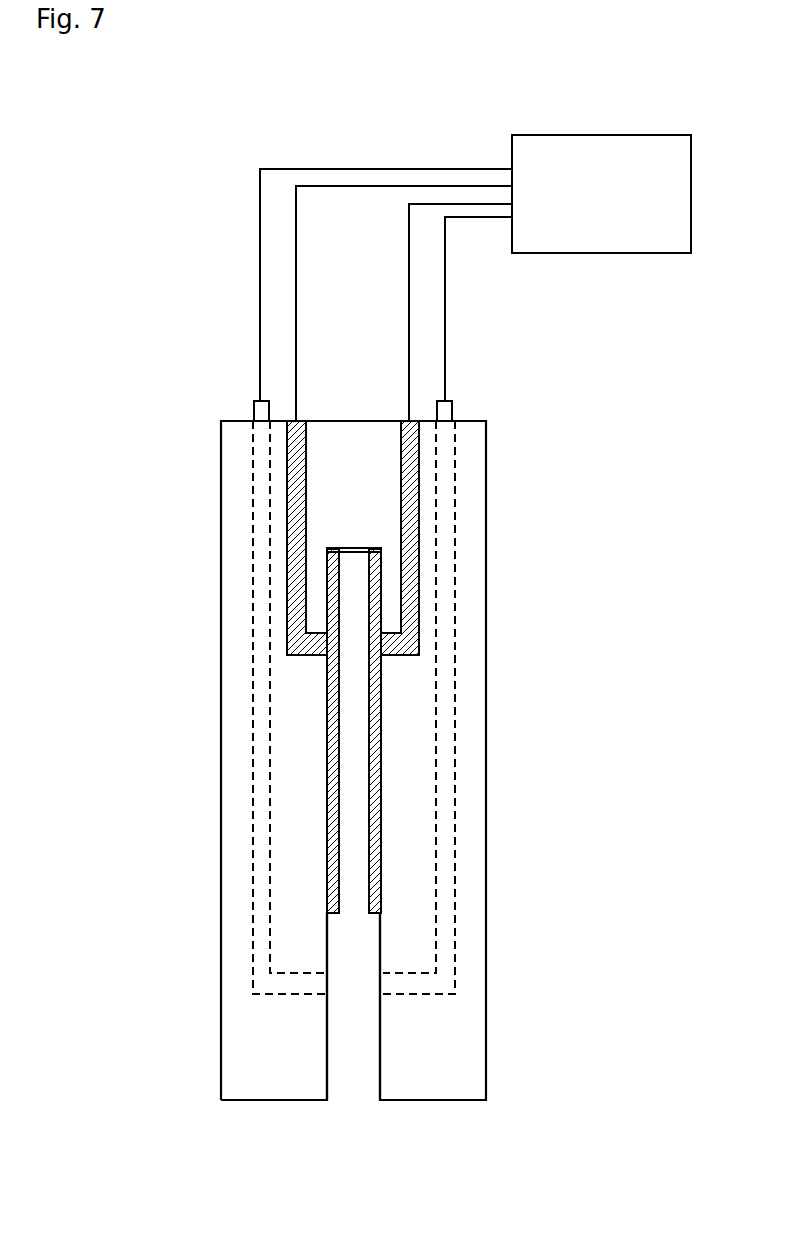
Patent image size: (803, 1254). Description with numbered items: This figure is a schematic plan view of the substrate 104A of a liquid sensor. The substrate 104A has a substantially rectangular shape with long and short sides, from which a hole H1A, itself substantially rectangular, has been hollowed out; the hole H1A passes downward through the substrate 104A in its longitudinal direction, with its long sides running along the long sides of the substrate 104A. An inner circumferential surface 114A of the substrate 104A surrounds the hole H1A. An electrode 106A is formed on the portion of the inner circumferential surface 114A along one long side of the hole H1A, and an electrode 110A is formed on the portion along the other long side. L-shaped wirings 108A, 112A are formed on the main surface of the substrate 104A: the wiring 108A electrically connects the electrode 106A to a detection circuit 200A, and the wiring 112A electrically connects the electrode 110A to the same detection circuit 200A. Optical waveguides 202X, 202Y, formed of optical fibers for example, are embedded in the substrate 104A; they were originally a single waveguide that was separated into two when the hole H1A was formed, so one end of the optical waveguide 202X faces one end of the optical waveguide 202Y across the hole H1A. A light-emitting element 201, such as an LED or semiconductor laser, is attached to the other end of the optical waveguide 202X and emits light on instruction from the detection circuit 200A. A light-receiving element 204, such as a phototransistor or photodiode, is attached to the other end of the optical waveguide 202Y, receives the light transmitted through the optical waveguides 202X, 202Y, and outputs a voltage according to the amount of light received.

The detection circuit 200A is at (618, 135).
The light-emitting element 201 is at (254, 410).
The light-receiving element 204 is at (452, 410).
The substrate 104A is at (277, 1115).
The electrode 106A is at (327, 828).
The wiring 108A is at (287, 583).
The electrode 110A is at (381, 826).
The wiring 112A is at (419, 583).
The inner circumferential surface 114A is at (340, 1025).
The hole H1A is at (360, 1070).
The optical waveguide 202X is at (253, 942).
The optical waveguide 202Y is at (455, 942).